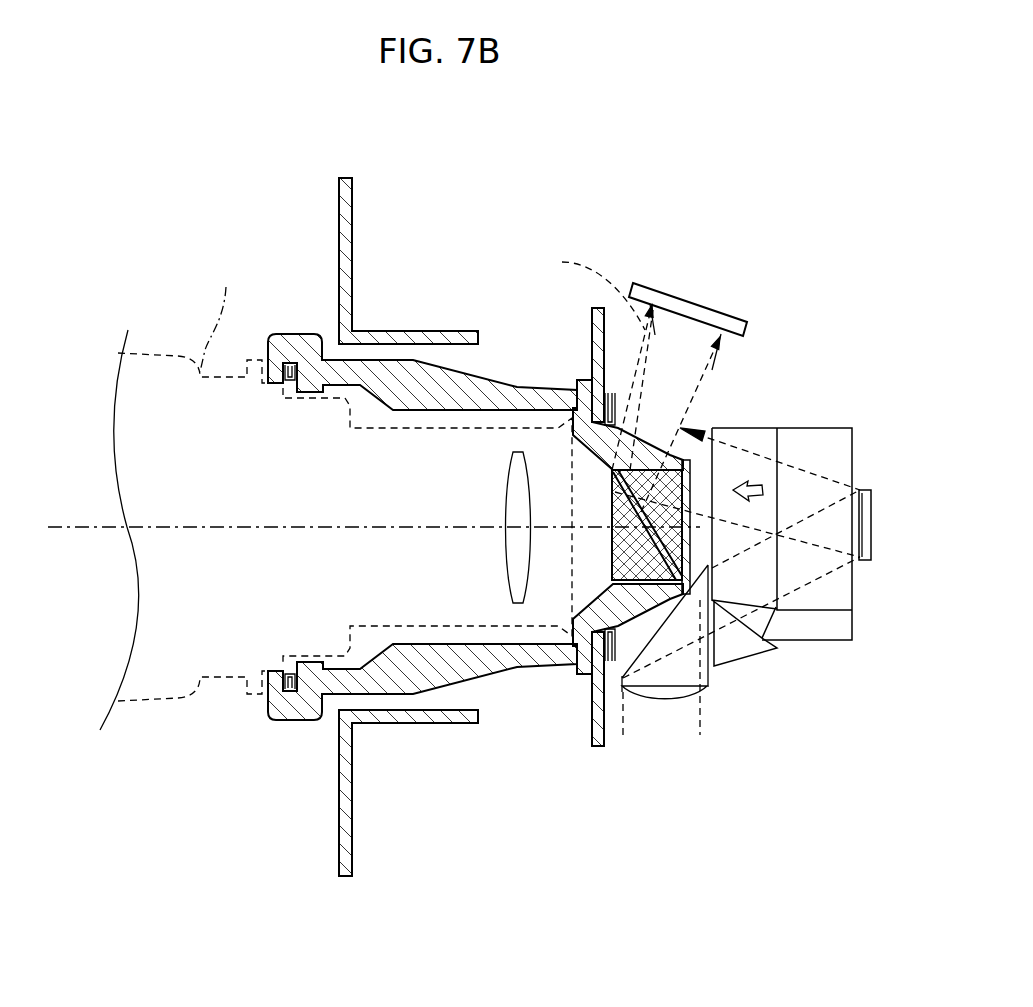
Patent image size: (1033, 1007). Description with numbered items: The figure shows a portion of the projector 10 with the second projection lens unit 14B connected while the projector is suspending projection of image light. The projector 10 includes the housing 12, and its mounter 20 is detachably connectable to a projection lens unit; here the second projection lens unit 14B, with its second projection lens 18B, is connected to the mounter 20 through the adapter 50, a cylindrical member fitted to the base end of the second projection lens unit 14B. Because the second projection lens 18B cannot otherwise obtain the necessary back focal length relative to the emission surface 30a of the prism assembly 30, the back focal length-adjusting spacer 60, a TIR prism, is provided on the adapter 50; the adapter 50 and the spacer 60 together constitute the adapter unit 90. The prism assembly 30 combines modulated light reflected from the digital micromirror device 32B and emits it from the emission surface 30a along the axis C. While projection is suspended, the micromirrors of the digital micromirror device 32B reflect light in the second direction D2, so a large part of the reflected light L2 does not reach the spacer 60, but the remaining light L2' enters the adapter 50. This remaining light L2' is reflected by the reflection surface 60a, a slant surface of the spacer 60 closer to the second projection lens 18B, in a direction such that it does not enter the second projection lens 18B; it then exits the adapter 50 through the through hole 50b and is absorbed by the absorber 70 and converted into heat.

The projector 10 is at (152, 305).
The housing 12 is at (340, 208).
The second projection lens unit 14B is at (345, 481).
The adapter 50 is at (285, 333).
The adapter unit 90 is at (528, 366).
The mounter 20 is at (591, 328).
The second projection lens 18B is at (515, 505).
The back focal length-adjusting spacer 60 is at (613, 537).
The reflection surface 60a is at (638, 525).
The absorber 70 is at (697, 302).
The through hole 50b is at (632, 446).
The emission surface 30a is at (700, 430).
The prism assembly 30 is at (848, 402).
The digital micromirror device 32B is at (868, 565).
The reflected light L2 is at (737, 540).
The remaining light L2' is at (591, 288).
The second direction D2 is at (753, 485).
The optical axis C is at (361, 529).